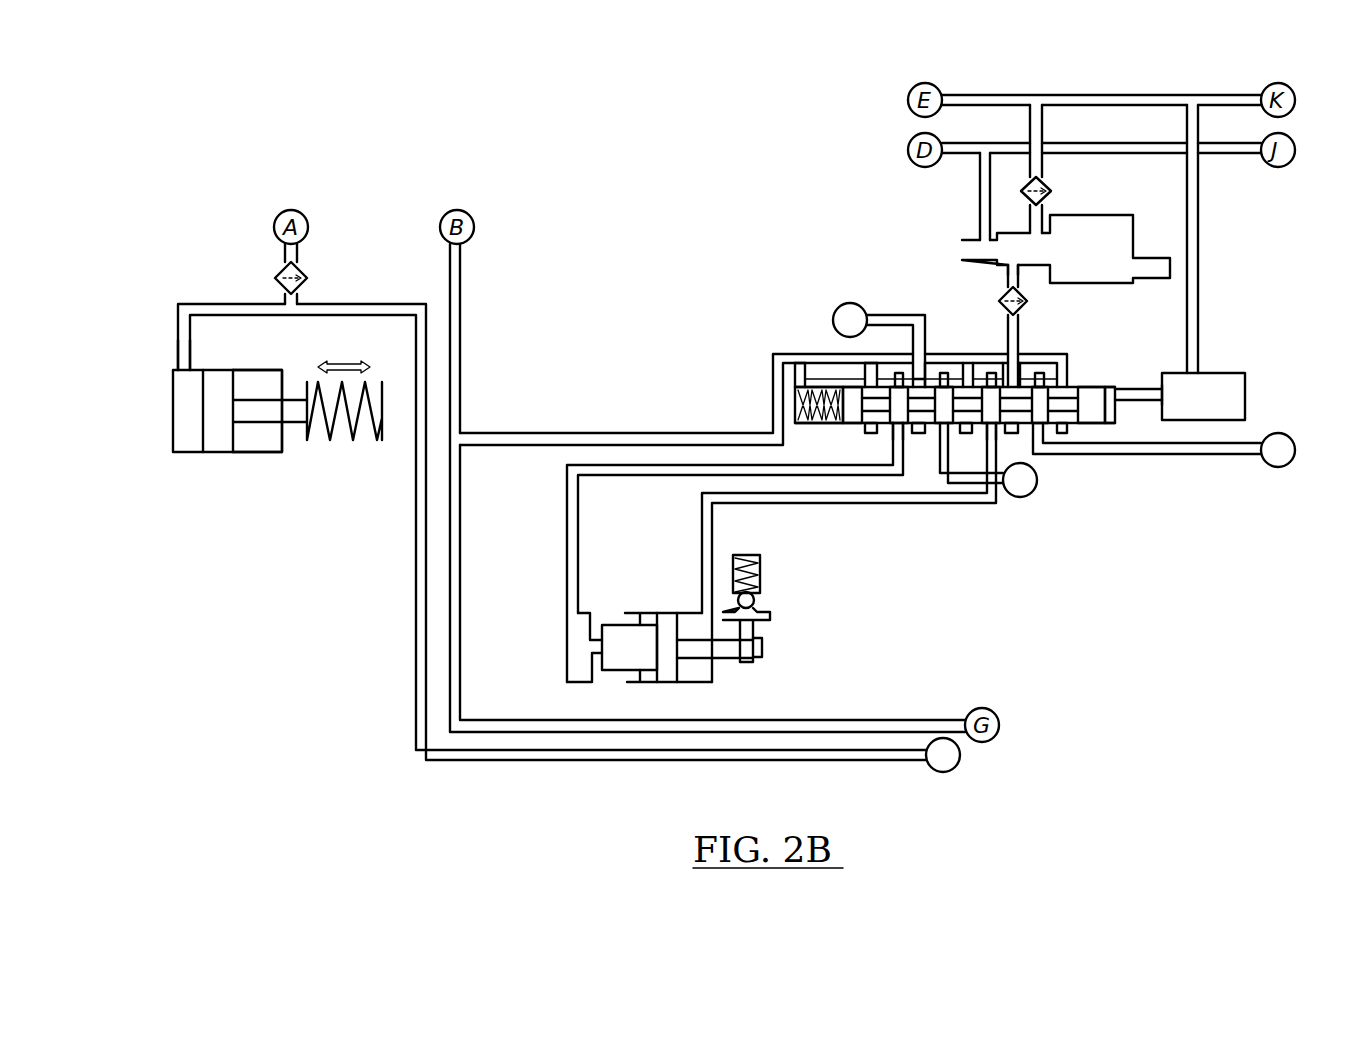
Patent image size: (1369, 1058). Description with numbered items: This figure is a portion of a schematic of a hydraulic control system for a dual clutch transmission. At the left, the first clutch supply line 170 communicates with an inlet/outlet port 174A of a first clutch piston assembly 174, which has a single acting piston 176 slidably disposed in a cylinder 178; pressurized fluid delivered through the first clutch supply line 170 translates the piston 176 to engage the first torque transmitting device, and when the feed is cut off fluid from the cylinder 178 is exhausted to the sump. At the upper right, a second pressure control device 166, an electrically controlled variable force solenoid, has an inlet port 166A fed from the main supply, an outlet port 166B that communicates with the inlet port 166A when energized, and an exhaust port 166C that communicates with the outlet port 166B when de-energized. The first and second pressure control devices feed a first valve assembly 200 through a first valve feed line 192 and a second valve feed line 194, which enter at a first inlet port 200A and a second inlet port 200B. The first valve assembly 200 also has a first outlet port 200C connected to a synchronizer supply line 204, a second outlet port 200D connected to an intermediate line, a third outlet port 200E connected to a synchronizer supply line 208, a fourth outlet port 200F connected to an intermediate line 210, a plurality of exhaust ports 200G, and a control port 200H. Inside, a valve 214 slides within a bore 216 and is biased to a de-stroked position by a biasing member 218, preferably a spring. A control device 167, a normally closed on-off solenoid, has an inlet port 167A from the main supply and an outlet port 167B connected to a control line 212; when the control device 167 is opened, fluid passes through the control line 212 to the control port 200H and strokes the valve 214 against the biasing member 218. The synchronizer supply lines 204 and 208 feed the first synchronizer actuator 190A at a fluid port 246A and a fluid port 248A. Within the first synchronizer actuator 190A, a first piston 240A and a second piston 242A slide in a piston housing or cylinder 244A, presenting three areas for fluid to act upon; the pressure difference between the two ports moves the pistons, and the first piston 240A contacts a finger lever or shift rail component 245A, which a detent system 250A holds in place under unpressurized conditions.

The first clutch supply line 170 is at (622, 762).
The first clutch piston assembly 174 is at (239, 452).
The inlet/outlet port 174A is at (190, 368).
The single acting piston 176 is at (218, 433).
The cylinder 178 is at (270, 436).
The synchronizer supply line 204 is at (600, 463).
The synchronizer supply line 208 is at (750, 507).
The first synchronizer actuator 190A is at (682, 608).
The first piston 240A is at (643, 637).
The second piston 242A is at (602, 620).
The piston housing or cylinder 244A is at (583, 680).
The finger lever or shift rail component 245A is at (763, 648).
The fluid port 246A is at (575, 613).
The fluid port 248A is at (706, 612).
The detent system 250A is at (770, 610).
The first valve assembly 200 is at (819, 398).
The first inlet port 200A is at (917, 363).
The second inlet port 200B is at (1010, 378).
The first outlet port 200C is at (900, 427).
The second outlet port 200D is at (948, 433).
The third outlet port 200E is at (993, 453).
The fourth outlet port 200F is at (1037, 423).
The exhaust ports 200G is at (867, 363).
The control port 200H is at (1118, 397).
The first valve feed line 192 is at (877, 313).
The second valve feed line 194 is at (1025, 318).
The valve 214 is at (1092, 397).
The bore 216 is at (800, 412).
The biasing member 218 is at (820, 422).
The intermediate line 210 is at (1222, 455).
The control line 212 is at (1140, 403).
The second pressure control device 166 is at (1079, 194).
The inlet port 166A is at (1035, 232).
The outlet port 166B is at (1013, 265).
The exhaust port 166C is at (982, 237).
The control device 167 is at (1265, 269).
The inlet port 167A is at (1197, 370).
The outlet port 167B is at (1162, 397).